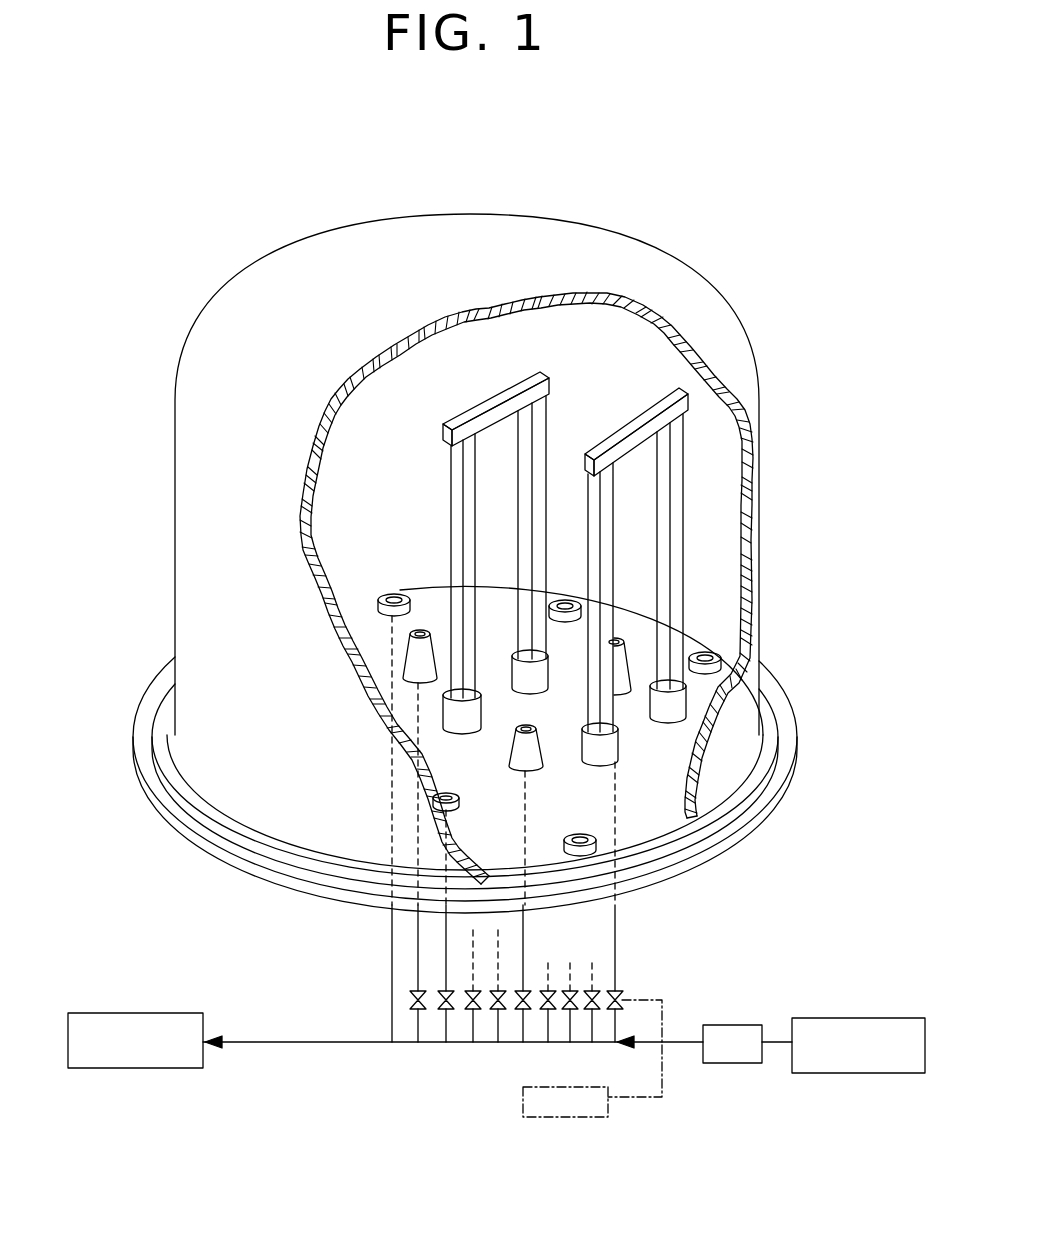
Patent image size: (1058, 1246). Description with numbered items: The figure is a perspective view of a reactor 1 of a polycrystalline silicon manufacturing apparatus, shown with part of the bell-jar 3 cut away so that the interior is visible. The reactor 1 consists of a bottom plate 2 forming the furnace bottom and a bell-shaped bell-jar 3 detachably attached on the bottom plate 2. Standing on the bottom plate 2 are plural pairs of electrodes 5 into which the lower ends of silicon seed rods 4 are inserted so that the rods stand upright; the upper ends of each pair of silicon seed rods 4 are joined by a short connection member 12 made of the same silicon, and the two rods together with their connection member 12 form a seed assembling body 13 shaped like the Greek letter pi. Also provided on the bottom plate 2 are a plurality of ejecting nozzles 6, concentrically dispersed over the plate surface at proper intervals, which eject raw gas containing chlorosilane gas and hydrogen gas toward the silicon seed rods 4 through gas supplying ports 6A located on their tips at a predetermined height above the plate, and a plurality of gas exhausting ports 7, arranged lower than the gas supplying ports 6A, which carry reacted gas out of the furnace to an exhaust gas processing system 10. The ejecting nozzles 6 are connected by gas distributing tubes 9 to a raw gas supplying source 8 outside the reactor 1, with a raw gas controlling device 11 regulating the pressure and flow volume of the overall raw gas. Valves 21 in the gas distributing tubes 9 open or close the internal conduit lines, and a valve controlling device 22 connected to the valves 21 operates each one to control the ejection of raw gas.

The reactor 1 is at (832, 226).
The bottom plate 2 is at (297, 905).
The bell-jar 3 is at (202, 476).
The silicon seed rods 4 is at (452, 510).
The electrodes 5 is at (528, 690).
The ejecting nozzles 6 is at (405, 674).
The gas supplying ports 6A is at (410, 632).
The gas exhausting ports 7 is at (380, 601).
The raw gas supplying source 8 is at (857, 1074).
The gas distributing tubes 9 is at (418, 797).
The exhaust gas processing system 10 is at (137, 1069).
The raw gas controlling device 11 is at (730, 1064).
The connection member 12 is at (500, 398).
The seed assembling bodies 13 is at (557, 363).
The valves 21 is at (413, 1010).
The valve controlling device 22 is at (583, 1118).